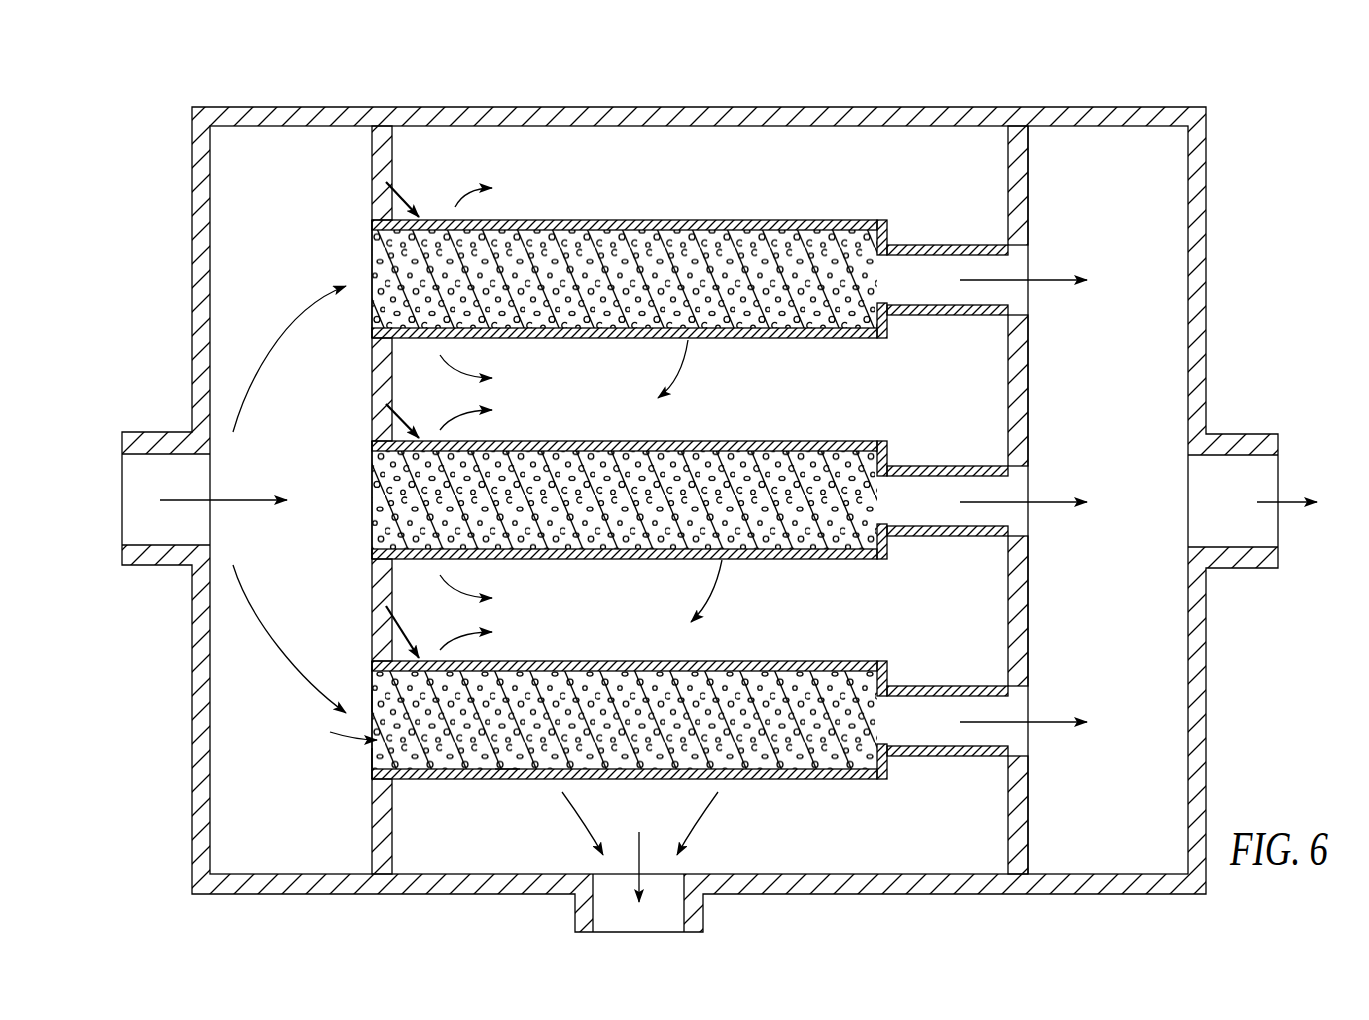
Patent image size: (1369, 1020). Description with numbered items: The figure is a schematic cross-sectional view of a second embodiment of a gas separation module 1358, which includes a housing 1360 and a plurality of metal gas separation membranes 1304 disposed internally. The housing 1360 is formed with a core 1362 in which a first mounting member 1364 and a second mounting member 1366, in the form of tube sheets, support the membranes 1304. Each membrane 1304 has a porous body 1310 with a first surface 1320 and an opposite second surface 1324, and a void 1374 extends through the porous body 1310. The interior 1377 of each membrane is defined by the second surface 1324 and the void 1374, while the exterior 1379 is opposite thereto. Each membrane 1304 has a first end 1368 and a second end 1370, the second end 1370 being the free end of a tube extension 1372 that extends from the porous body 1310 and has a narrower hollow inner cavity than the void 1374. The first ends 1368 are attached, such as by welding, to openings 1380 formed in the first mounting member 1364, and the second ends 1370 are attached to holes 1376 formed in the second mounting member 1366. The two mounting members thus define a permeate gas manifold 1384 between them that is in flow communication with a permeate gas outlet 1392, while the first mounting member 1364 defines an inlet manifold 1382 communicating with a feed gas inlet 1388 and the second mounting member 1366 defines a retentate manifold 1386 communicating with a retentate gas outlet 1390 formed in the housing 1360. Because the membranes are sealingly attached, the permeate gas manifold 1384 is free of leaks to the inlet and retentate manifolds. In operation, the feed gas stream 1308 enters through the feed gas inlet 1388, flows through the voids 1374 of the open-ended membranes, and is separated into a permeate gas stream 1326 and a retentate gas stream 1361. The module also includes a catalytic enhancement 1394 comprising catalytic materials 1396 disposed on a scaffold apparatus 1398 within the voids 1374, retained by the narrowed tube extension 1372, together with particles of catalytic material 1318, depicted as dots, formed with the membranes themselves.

The metal gas separation membrane 1304 is at (378, 188).
The feed gas stream 1308 is at (232, 500).
The porous body 1310 is at (699, 504).
The particles of catalytic material 1318 is at (498, 768).
The first surface 1320 is at (612, 220).
The second surface 1324 is at (805, 240).
The permeate gas stream 1326 is at (642, 838).
The gas separation module 1358 is at (184, 141).
The housing 1360 is at (1220, 148).
The retentate gas stream 1361 is at (1285, 503).
The core 1362 is at (697, 163).
The first mounting member 1364 is at (372, 832).
The second mounting member 1366 is at (1030, 832).
The first end 1368 is at (372, 224).
The second end 1370 is at (1030, 252).
The tube extension 1372 is at (999, 488).
The void 1374 is at (495, 330).
The holes 1376 is at (1030, 309).
The interior 1377 is at (802, 327).
The exterior 1379 is at (632, 378).
The openings 1380 is at (372, 318).
The inlet manifold 1382 is at (292, 181).
The permeate gas manifold 1384 is at (967, 824).
The retentate manifold 1386 is at (1122, 394).
The feed gas inlet 1388 is at (143, 545).
The retentate gas outlet 1390 is at (1243, 457).
The permeate gas outlet 1392 is at (603, 892).
The catalytic enhancement 1394 is at (331, 726).
The catalytic materials 1396 is at (372, 700).
The scaffold apparatus 1398 is at (372, 758).